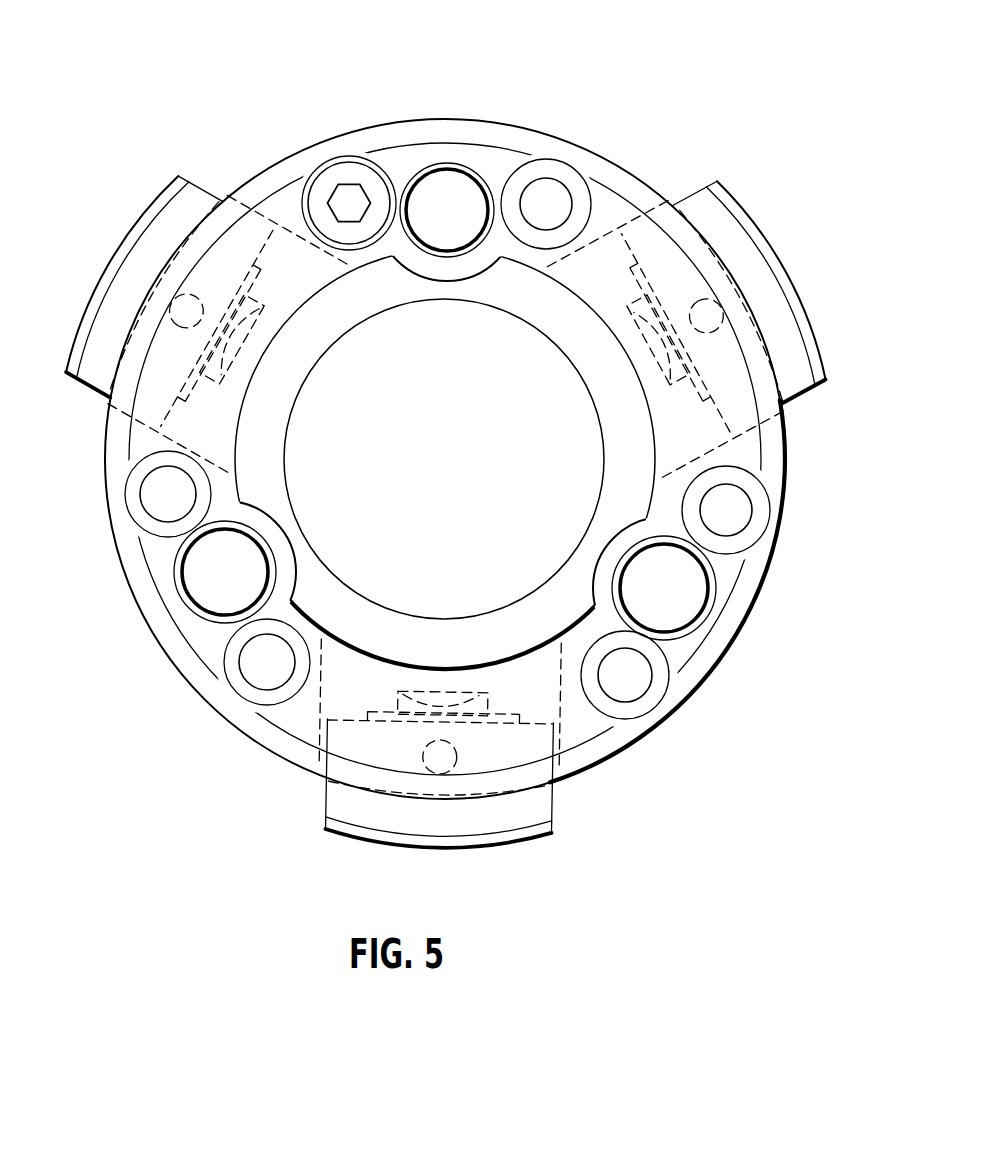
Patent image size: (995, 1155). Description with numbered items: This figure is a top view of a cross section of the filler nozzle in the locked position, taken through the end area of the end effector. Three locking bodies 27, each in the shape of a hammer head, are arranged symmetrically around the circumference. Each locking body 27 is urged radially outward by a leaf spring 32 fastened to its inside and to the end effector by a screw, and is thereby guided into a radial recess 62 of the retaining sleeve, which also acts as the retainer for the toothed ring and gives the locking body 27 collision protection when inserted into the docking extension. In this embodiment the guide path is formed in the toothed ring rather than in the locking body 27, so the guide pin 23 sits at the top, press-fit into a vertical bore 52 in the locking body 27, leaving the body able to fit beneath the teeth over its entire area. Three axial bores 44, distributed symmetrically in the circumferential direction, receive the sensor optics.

The axial bore 44 is at (467, 188).
The leaf spring 32 is at (679, 205).
The guide pin 23 is at (763, 259).
The vertical bore 52 is at (722, 316).
The locking body 27 is at (797, 372).
The radial recess 62 is at (773, 458).